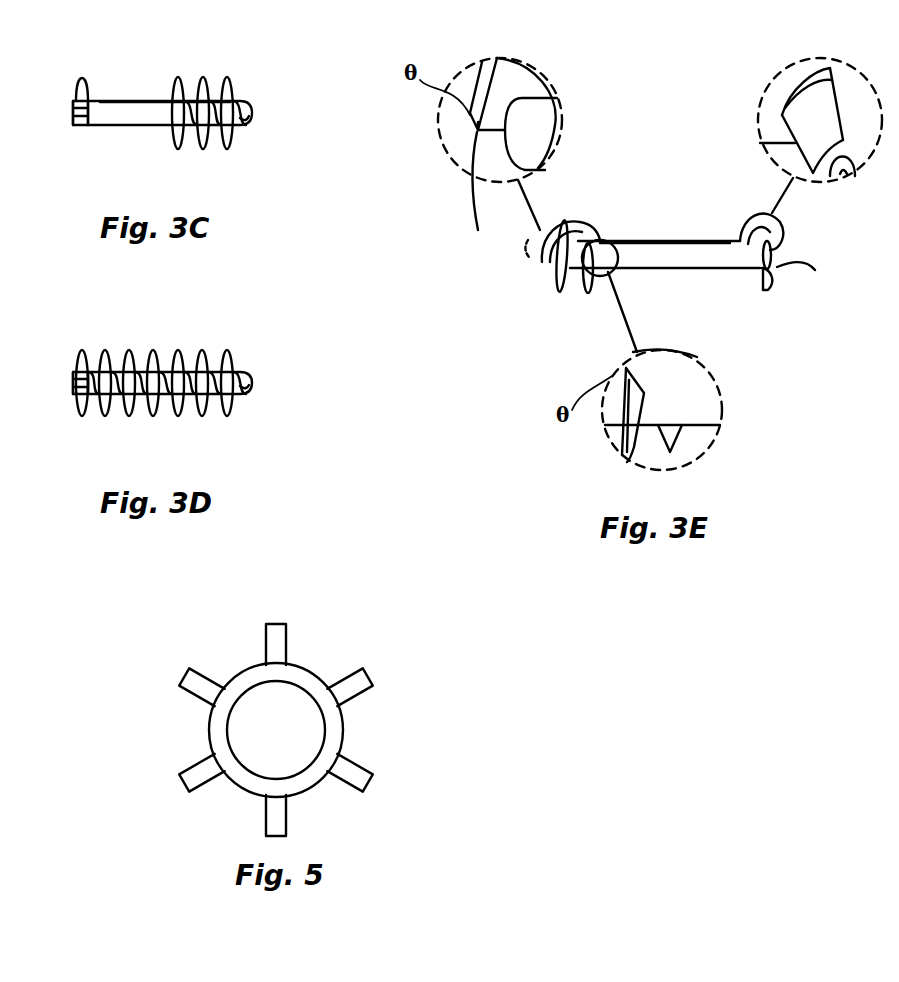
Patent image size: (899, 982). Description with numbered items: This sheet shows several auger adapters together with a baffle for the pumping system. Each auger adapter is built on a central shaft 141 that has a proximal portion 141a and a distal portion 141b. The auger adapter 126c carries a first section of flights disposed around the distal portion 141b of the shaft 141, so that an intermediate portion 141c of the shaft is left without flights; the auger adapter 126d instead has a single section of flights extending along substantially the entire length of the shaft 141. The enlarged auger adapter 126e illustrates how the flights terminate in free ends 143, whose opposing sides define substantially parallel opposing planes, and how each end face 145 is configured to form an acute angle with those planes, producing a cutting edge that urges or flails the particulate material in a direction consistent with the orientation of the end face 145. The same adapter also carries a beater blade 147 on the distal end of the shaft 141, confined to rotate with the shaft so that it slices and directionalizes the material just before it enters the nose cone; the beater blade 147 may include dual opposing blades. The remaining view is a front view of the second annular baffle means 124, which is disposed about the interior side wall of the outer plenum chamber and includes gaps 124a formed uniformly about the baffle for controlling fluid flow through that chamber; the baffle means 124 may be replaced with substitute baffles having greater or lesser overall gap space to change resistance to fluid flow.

In FIG. 3C, the central shaft 141 is at (115, 127).
In FIG. 3D, the central shaft 141 is at (152, 392).
In FIG. 3E, the central shaft 141 is at (733, 270).
In FIG. 3C, the proximal portion 141a is at (80, 128).
In FIG. 3D, the proximal portion 141a is at (80, 396).
In FIG. 3C, the distal portion 141b is at (245, 120).
In FIG. 3D, the distal portion 141b is at (246, 388).
In FIG. 3C, the intermediate portion 141c is at (125, 104).
In FIG. 3E, the intermediate portion 141c is at (658, 243).
In FIG. 3C, the auger adapter 126c is at (253, 116).
In FIG. 3D, the auger adapter 126d is at (253, 381).
In FIG. 3E, the auger adapter 126e is at (603, 136).
In FIG. 3E, the free end 143 is at (610, 272).
In FIG. 3E, the end face 145 is at (753, 400).
In FIG. 3E, the beater blade 147 is at (812, 268).
In FIG. 5, the second annular baffle means 124 is at (336, 628).
In FIG. 5, the gap 124a is at (332, 667).